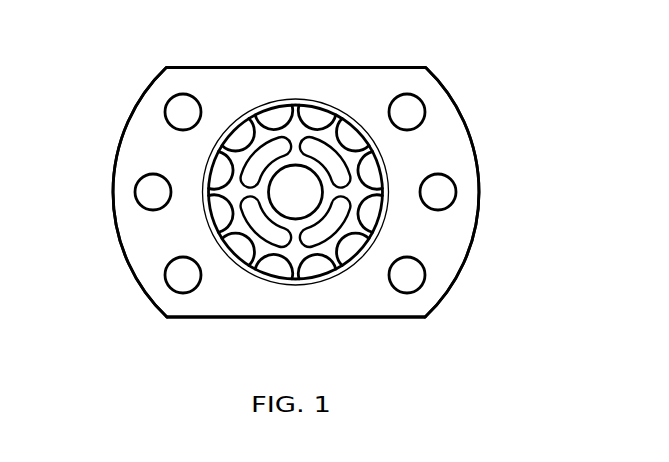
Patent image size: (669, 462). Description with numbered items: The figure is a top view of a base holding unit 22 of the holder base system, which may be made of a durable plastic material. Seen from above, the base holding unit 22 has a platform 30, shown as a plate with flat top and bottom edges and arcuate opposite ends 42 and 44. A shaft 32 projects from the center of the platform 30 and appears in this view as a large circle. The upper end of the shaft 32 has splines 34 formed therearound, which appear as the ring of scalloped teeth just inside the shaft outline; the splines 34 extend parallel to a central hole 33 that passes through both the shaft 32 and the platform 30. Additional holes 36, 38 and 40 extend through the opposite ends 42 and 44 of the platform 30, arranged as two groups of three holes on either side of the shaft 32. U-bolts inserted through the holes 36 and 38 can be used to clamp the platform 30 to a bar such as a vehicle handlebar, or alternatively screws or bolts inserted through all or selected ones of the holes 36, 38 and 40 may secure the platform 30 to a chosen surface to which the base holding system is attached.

The base holding unit 22 is at (494, 110).
The platform 30 is at (240, 301).
The shaft 32 is at (382, 172).
The central hole 33 is at (272, 168).
The splines 34 is at (298, 115).
The holes 36 is at (165, 279).
The holes 38 is at (165, 111).
The holes 40 is at (135, 195).
The end of platform 42 is at (117, 243).
The end of platform 44 is at (479, 183).